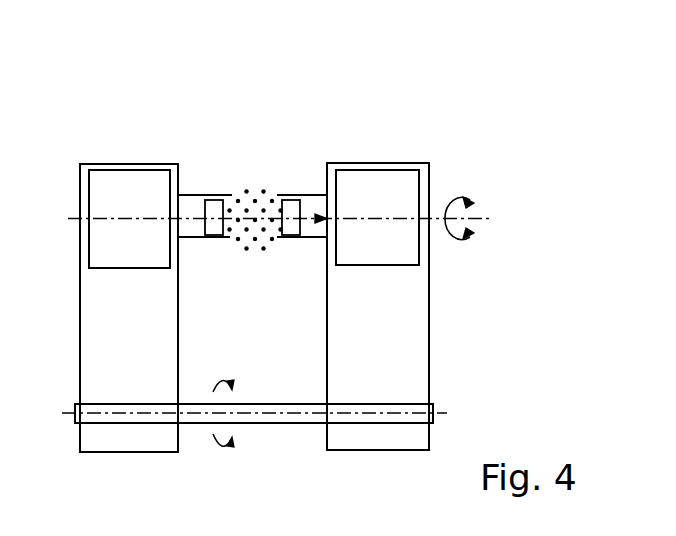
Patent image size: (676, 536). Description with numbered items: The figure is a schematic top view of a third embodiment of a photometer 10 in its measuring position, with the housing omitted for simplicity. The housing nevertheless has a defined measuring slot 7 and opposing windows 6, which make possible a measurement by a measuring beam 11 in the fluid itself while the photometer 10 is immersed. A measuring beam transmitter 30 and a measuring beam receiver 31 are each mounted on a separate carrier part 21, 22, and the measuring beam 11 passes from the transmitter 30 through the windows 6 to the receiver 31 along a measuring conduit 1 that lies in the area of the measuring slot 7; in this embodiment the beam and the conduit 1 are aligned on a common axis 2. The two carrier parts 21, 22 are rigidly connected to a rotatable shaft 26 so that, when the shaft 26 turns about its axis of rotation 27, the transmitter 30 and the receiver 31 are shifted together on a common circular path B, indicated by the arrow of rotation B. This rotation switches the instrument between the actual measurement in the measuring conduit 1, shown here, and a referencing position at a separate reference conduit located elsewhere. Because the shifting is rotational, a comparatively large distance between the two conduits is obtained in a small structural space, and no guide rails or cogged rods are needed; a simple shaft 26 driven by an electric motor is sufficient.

The measuring conduit 1 is at (193, 230).
The axis of rotation 2 is at (70, 218).
The opposing windows 6 is at (215, 230).
The measuring slot 7 is at (256, 203).
The photometer 10 is at (272, 130).
The measuring beam 11 is at (313, 212).
The carrier part 21 is at (137, 310).
The carrier part 22 is at (397, 310).
The rotatable shaft 26 is at (300, 417).
The axis of rotation 27 is at (75, 413).
The measuring beam transmitter 30 is at (122, 198).
The measuring beam receiver 31 is at (413, 198).
The circular path B is at (455, 240).